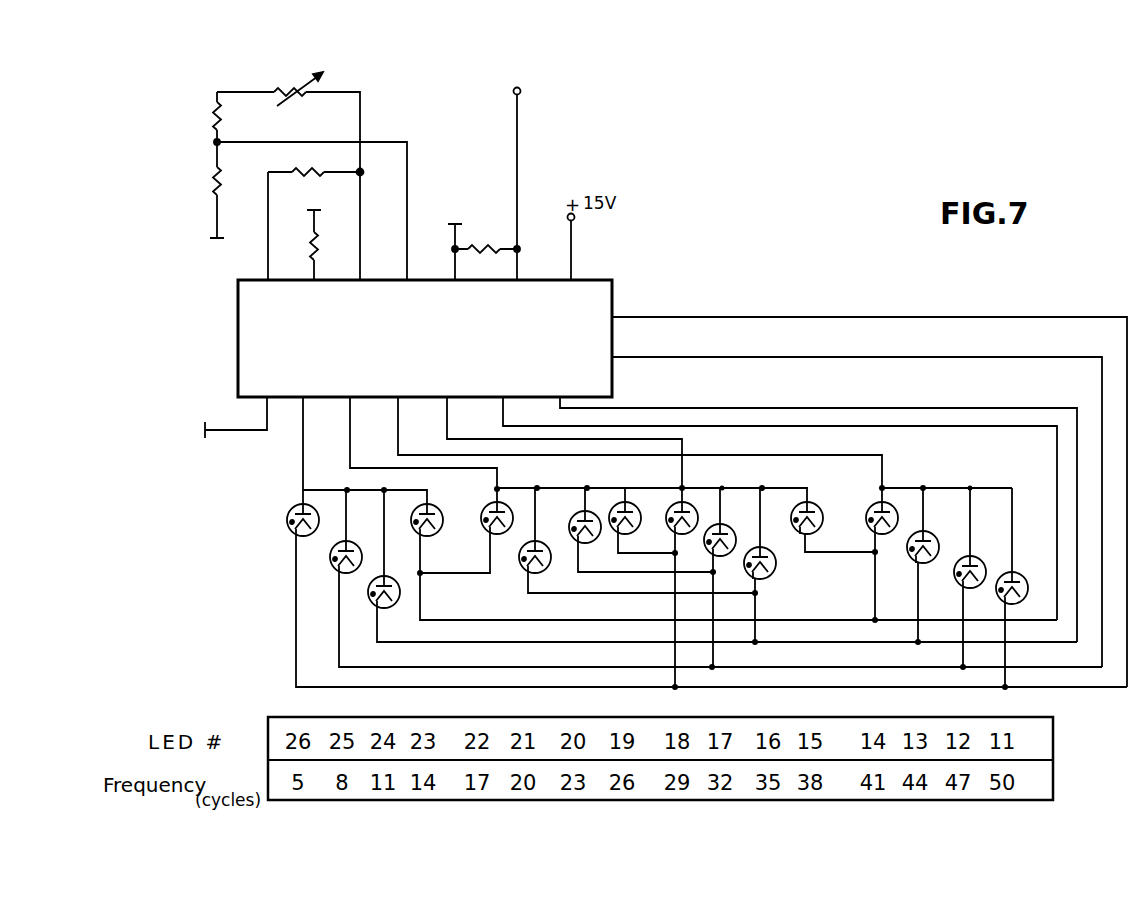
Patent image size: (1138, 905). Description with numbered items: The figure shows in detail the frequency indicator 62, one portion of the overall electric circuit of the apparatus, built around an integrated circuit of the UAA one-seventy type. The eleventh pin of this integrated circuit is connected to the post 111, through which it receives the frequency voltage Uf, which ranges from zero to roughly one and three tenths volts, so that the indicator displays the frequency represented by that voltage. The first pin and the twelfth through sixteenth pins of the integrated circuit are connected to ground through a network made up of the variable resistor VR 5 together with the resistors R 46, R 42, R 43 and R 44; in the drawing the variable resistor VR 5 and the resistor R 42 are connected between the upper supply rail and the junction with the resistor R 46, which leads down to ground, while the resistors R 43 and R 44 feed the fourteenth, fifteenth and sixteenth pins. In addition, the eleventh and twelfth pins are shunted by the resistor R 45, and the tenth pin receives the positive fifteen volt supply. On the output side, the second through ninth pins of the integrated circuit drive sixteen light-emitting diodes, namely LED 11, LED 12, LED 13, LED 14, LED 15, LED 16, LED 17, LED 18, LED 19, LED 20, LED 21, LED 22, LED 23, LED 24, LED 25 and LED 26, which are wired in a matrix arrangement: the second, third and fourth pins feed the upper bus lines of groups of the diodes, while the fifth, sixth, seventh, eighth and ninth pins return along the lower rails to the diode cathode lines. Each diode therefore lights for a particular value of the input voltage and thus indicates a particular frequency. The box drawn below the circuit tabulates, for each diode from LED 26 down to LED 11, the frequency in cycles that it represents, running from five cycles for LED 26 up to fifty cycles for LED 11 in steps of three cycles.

The resistor 42 is at (190, 129).
The resistor 46 is at (195, 202).
The variable resistor 5 is at (288, 170).
The resistor 43 is at (314, 224).
The resistor 44 is at (296, 245).
The resistor 45 is at (484, 244).
The post 111 is at (562, 165).
The frequency indicator 62 is at (708, 214).
The light-emitting diode 11 is at (1020, 573).
The light-emitting diode 12 is at (955, 574).
The light-emitting diode 13 is at (930, 532).
The light-emitting diode 14 is at (871, 505).
The light-emitting diode 15 is at (799, 500).
The light-emitting diode 16 is at (776, 566).
The light-emitting diode 17 is at (727, 524).
The light-emitting diode 18 is at (673, 528).
The light-emitting diode 19 is at (655, 490).
The light-emitting diode 20 is at (574, 512).
The light-emitting diode 21 is at (527, 568).
The light-emitting diode 22 is at (488, 504).
The light-emitting diode 23 is at (447, 538).
The light-emitting diode 24 is at (393, 605).
The light-emitting diode 25 is at (331, 565).
The light-emitting diode 26 is at (287, 518).